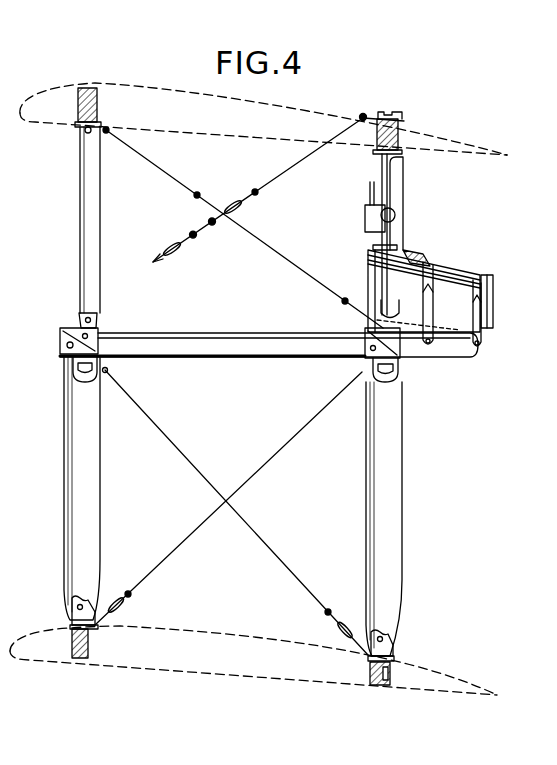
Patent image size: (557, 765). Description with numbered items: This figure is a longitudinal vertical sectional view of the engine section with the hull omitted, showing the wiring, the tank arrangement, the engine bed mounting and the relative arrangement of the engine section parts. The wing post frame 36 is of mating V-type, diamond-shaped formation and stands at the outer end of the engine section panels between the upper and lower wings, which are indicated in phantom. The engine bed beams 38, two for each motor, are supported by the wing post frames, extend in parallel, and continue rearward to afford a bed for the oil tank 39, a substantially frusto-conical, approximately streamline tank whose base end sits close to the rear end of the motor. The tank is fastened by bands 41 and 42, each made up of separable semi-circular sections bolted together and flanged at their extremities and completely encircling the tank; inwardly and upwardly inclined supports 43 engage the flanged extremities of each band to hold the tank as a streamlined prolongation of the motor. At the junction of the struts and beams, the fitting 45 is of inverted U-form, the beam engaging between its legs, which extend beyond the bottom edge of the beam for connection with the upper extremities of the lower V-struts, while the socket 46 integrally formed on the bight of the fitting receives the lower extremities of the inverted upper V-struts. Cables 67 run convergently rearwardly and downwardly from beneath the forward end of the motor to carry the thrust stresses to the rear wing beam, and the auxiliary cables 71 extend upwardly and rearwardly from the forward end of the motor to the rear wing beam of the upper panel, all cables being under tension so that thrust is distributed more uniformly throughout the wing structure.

The wing post frame 36 is at (96, 477).
The engine bed beam 38 is at (215, 345).
The oil tank 39 is at (463, 273).
The band 41 is at (430, 263).
The band 42 is at (482, 276).
The support 43 is at (482, 327).
The fitting 45 is at (58, 356).
The socket 46 is at (96, 320).
The cable 67 is at (194, 466).
The cable 71 is at (282, 174).